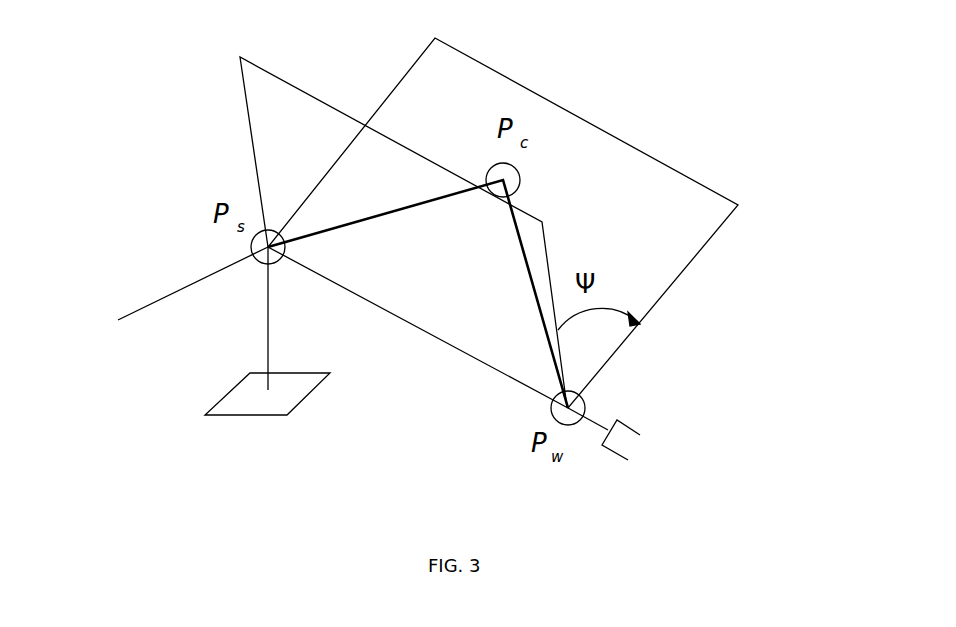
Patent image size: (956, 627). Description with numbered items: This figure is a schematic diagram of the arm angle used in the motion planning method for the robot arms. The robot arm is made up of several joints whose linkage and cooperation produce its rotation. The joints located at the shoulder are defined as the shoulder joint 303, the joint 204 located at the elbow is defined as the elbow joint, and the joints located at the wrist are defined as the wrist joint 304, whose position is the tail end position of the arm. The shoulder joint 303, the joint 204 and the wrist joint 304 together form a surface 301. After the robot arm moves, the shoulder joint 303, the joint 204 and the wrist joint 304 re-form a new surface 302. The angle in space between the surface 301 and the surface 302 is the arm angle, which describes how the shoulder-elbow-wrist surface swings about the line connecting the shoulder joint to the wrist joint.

The surface 301 is at (282, 110).
The joint 204 is at (503, 180).
The new surface 302 is at (637, 197).
The shoulder joint 303 is at (171, 292).
The wrist joint 304 is at (585, 410).